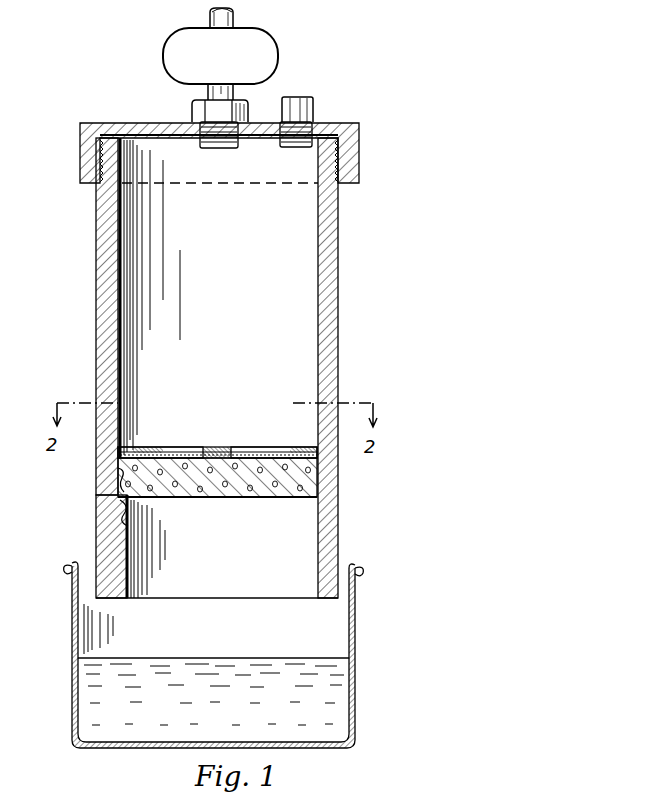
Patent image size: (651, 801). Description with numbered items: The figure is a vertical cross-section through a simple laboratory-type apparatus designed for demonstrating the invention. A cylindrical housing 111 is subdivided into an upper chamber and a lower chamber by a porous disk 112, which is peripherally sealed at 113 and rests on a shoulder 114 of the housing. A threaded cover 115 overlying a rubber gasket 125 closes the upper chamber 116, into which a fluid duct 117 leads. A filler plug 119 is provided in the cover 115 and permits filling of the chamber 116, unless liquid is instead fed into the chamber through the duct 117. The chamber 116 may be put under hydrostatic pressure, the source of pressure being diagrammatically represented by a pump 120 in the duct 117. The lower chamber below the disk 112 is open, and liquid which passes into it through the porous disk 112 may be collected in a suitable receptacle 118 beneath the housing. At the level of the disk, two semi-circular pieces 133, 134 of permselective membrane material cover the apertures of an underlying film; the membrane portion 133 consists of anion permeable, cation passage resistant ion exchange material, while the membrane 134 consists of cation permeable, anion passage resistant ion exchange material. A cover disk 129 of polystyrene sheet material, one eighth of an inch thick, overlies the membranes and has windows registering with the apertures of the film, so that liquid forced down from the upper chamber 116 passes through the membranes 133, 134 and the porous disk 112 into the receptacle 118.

The cylindrical housing 111 is at (330, 303).
The porous disk 112 is at (303, 490).
The peripheral seal 113 is at (118, 478).
The shoulder 114 is at (128, 526).
The threaded cover 115 is at (82, 150).
The upper chamber 116 is at (232, 303).
The fluid duct 117 is at (208, 90).
The receptacle 118 is at (75, 643).
The filler plug 119 is at (310, 99).
The pump 120 is at (172, 44).
The rubber gasket 125 is at (146, 145).
The cover disk 129 is at (124, 450).
The membrane portion 133 is at (276, 420).
The membrane 134 is at (176, 455).